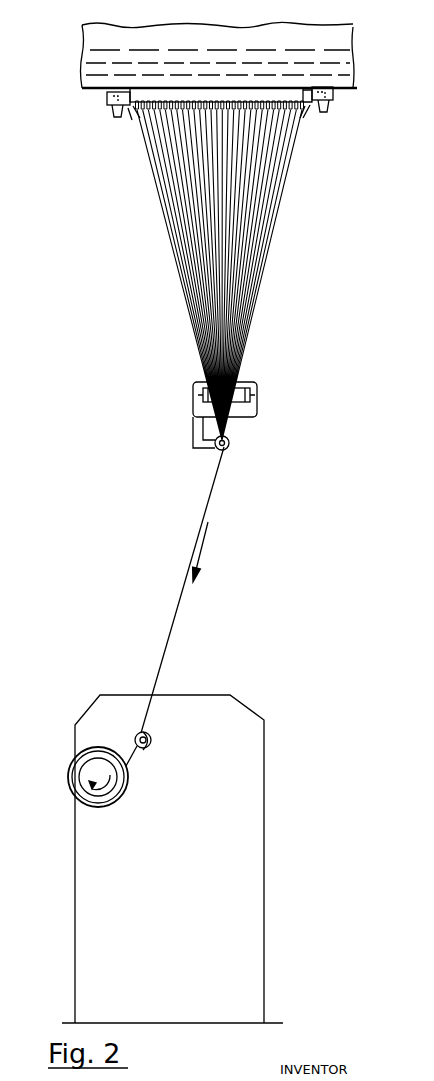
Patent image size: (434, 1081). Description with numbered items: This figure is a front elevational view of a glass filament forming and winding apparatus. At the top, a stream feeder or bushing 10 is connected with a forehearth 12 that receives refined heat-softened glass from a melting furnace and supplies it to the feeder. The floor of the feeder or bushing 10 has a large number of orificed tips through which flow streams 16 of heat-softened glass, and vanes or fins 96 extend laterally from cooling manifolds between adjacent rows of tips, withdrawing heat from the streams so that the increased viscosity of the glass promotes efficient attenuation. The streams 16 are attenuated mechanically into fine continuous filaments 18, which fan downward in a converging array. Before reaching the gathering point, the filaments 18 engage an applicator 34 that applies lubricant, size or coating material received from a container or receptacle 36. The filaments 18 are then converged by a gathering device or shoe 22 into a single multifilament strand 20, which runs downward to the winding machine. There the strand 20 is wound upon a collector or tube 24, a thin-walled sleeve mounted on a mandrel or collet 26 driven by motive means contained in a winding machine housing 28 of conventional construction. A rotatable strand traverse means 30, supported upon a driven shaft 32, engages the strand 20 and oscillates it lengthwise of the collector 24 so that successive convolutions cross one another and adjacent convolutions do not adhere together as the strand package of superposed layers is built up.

The stream feeder or bushing 10 is at (300, 92).
The forehearth 12 is at (88, 58).
The streams 16 is at (190, 115).
The continuous filaments 18 is at (205, 182).
The multifilament strand 20 is at (215, 492).
The gathering device or shoe 22 is at (218, 449).
The collector or tube 24 is at (84, 753).
The mandrel or collet 26 is at (86, 773).
The winding machine housing 28 is at (250, 720).
The strand traverse means 30 is at (148, 734).
The shaft 32 is at (147, 742).
The applicator 34 is at (246, 386).
The container or receptacle 36 is at (258, 413).
The vanes or fins 96 is at (148, 111).